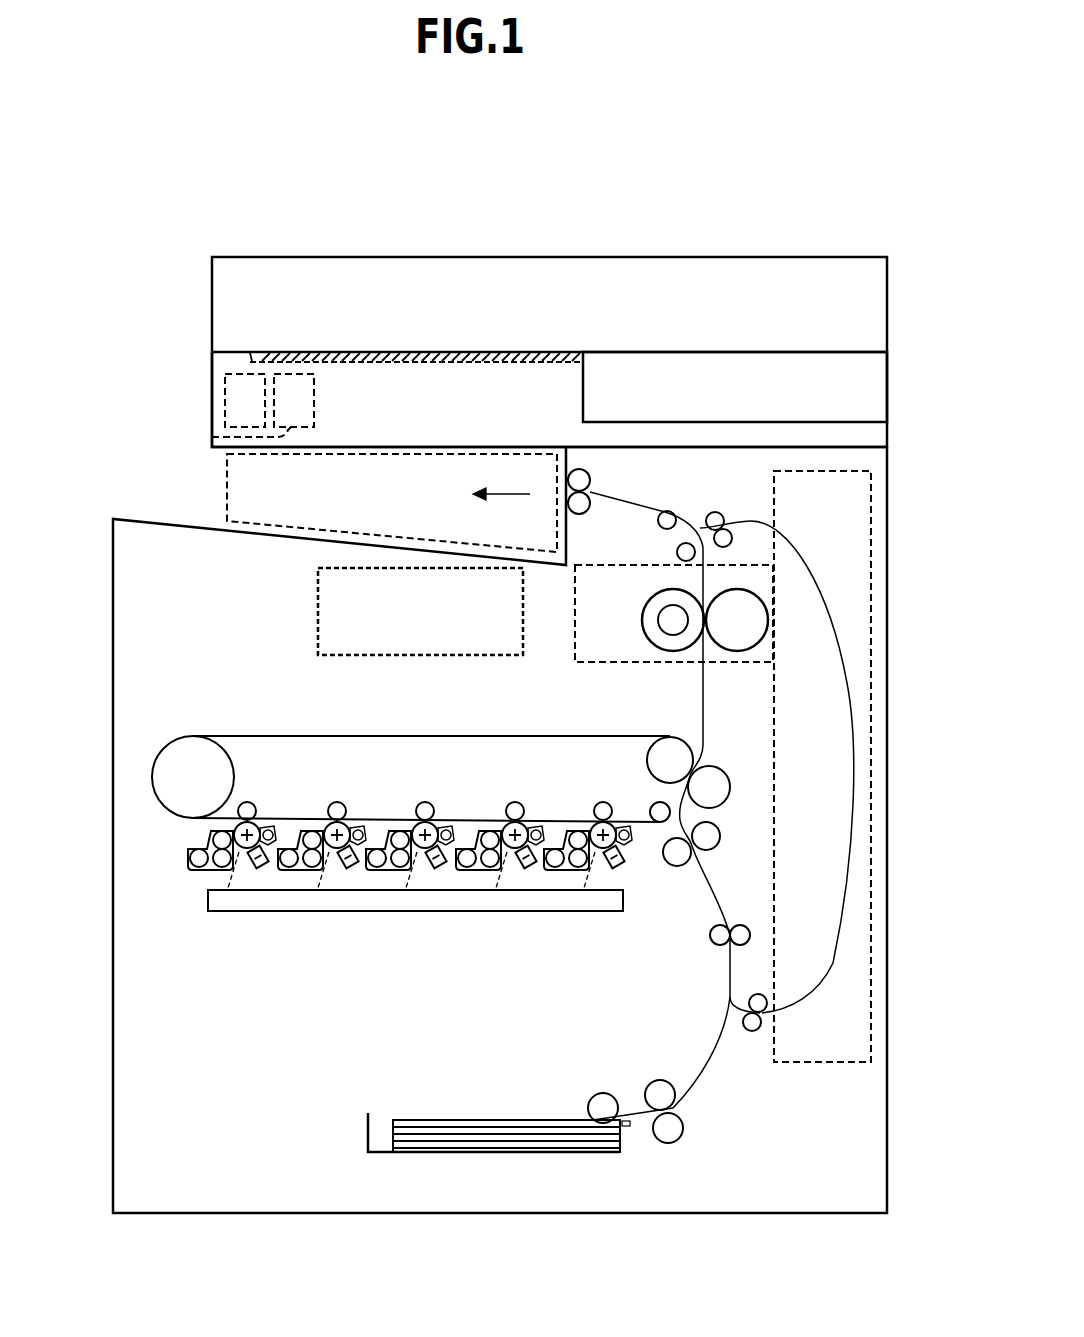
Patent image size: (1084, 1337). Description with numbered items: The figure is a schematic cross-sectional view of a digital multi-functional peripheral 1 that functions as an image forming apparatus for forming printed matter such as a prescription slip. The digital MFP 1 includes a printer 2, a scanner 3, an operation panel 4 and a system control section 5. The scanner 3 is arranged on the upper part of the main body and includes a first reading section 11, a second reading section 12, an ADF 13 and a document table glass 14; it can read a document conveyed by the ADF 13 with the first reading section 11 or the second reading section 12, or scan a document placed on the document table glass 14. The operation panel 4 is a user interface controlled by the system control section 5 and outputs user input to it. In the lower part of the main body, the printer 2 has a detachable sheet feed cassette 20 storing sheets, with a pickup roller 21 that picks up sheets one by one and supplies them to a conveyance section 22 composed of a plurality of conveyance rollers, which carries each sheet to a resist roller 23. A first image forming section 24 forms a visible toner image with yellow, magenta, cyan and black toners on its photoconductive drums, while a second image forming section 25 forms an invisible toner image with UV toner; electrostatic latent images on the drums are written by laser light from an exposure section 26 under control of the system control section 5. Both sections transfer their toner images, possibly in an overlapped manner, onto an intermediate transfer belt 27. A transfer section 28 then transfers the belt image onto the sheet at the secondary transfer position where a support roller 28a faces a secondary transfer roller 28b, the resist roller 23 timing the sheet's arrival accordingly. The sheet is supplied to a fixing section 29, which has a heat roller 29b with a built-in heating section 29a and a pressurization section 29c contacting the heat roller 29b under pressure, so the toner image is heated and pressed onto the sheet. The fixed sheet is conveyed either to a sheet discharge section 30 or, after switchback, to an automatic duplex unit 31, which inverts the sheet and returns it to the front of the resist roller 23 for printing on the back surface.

The digital multi-functional peripheral 1 is at (490, 254).
The printer 2 is at (121, 665).
The scanner 3 is at (212, 357).
The operation panel 4 is at (883, 392).
The system control section 5 is at (318, 598).
The first reading section 11 is at (225, 398).
The second reading section 12 is at (212, 437).
The ADF (Auto Document Feeder) 13 is at (785, 266).
The document table glass 14 is at (541, 364).
The sheet feed cassette 20 is at (368, 1134).
The pickup roller 21 is at (598, 1100).
The conveyance path (conveyance section) 22 is at (712, 1055).
The resist roller 23 is at (705, 853).
The first image forming section 24 is at (543, 802).
The second image forming section 25 is at (633, 802).
The exposure section 26 is at (250, 912).
The intermediate transfer belt 27 is at (470, 733).
The transfer section 28 is at (720, 780).
The support roller 28a is at (683, 754).
The secondary transfer roller 28b is at (714, 797).
The fixing section 29 is at (597, 665).
The heating section 29a is at (673, 612).
The heat roller 29b is at (668, 645).
The pressurization section 29c is at (739, 645).
The sheet discharge section 30 is at (227, 490).
The automatic duplex unit 31 is at (872, 551).